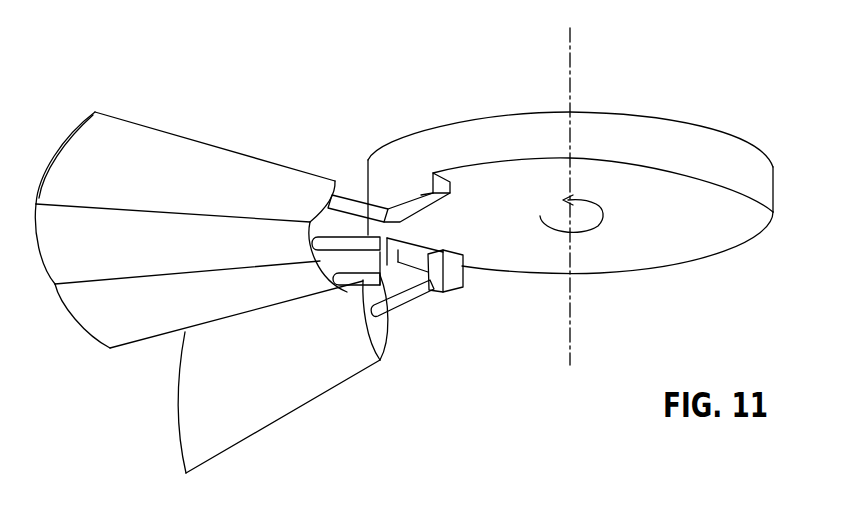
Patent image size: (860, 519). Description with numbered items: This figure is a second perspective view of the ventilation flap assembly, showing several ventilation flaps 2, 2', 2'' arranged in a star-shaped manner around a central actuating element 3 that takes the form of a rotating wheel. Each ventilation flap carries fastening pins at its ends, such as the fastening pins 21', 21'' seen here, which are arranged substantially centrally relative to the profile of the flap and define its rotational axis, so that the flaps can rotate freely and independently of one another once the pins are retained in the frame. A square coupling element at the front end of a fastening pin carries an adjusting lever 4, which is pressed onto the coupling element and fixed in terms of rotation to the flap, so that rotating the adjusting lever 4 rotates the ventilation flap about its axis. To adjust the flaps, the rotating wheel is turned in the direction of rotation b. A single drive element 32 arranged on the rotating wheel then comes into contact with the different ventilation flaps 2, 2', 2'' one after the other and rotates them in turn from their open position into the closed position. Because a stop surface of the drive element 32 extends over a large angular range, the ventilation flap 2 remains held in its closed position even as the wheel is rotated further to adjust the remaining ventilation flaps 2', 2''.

The ventilation flap 2 is at (229, 374).
The ventilation flap 2' is at (177, 307).
The ventilation flap 2'' is at (185, 143).
The actuating element 3 is at (657, 148).
The adjusting lever 4 is at (380, 252).
The fastening pin 21' is at (329, 146).
The fastening pin 21'' is at (361, 167).
The drive element 32 is at (421, 195).
The direction of rotation b is at (597, 208).